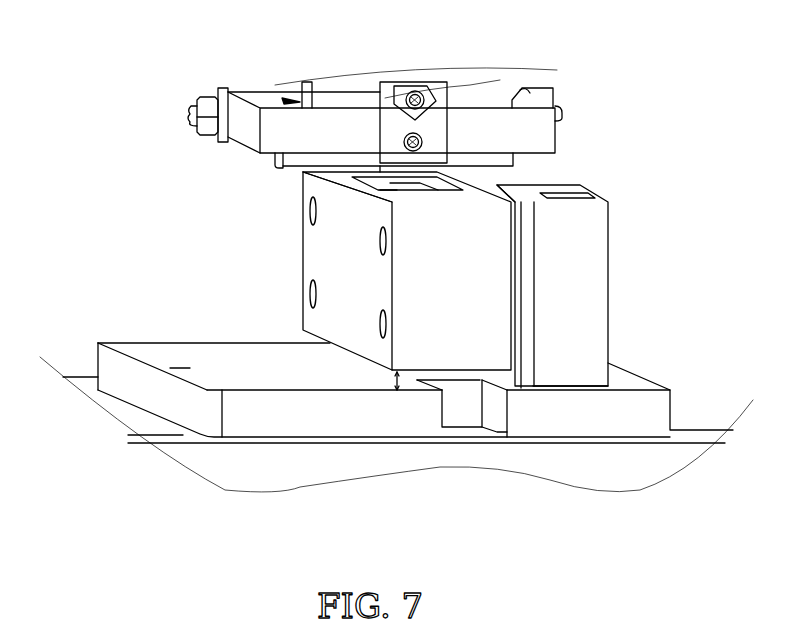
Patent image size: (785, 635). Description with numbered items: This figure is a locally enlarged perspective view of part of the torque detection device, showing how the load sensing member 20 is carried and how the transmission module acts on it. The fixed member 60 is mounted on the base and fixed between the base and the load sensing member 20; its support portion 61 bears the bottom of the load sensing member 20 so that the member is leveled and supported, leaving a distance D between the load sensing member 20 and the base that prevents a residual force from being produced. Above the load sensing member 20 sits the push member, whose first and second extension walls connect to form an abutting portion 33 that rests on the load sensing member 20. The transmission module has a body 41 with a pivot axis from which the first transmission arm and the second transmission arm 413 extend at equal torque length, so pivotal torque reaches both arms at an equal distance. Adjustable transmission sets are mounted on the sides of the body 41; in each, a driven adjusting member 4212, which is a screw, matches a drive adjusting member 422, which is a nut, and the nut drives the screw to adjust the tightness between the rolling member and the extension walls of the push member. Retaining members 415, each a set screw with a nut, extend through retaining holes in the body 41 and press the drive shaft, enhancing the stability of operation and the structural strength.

The load sensing member 20 is at (303, 238).
The abutting portion 33 is at (380, 168).
The body 41 is at (556, 136).
The second transmission arm 413 is at (276, 101).
The retaining member 415 is at (417, 133).
The drive adjusting member 422 is at (213, 104).
The driven adjusting member 4212 is at (186, 126).
The fixed member 60 is at (608, 247).
The support portion 61 is at (510, 373).
The distance D is at (402, 380).